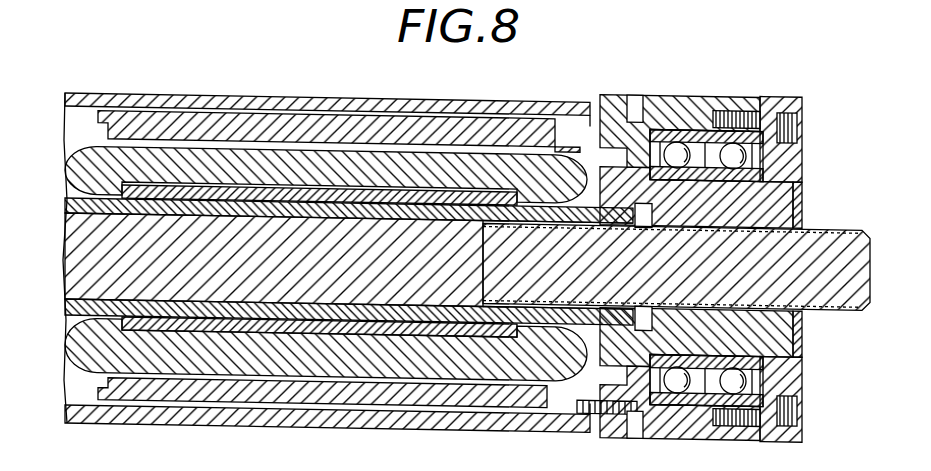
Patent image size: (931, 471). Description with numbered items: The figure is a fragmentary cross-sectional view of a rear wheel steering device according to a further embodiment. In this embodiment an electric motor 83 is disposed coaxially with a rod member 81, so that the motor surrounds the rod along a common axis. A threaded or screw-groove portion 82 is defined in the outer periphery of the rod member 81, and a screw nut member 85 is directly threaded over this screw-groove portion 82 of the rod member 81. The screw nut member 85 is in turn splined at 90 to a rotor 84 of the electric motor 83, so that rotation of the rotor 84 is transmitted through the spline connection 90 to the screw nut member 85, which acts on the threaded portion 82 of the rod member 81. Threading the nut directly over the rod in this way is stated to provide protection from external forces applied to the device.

The rod member 81 is at (107, 250).
The threaded or screw-groove portion 82 is at (843, 222).
The electric motor 83 is at (340, 152).
The rotor 84 is at (573, 306).
The screw nut member 85 is at (800, 164).
The spline connection 90 is at (617, 180).